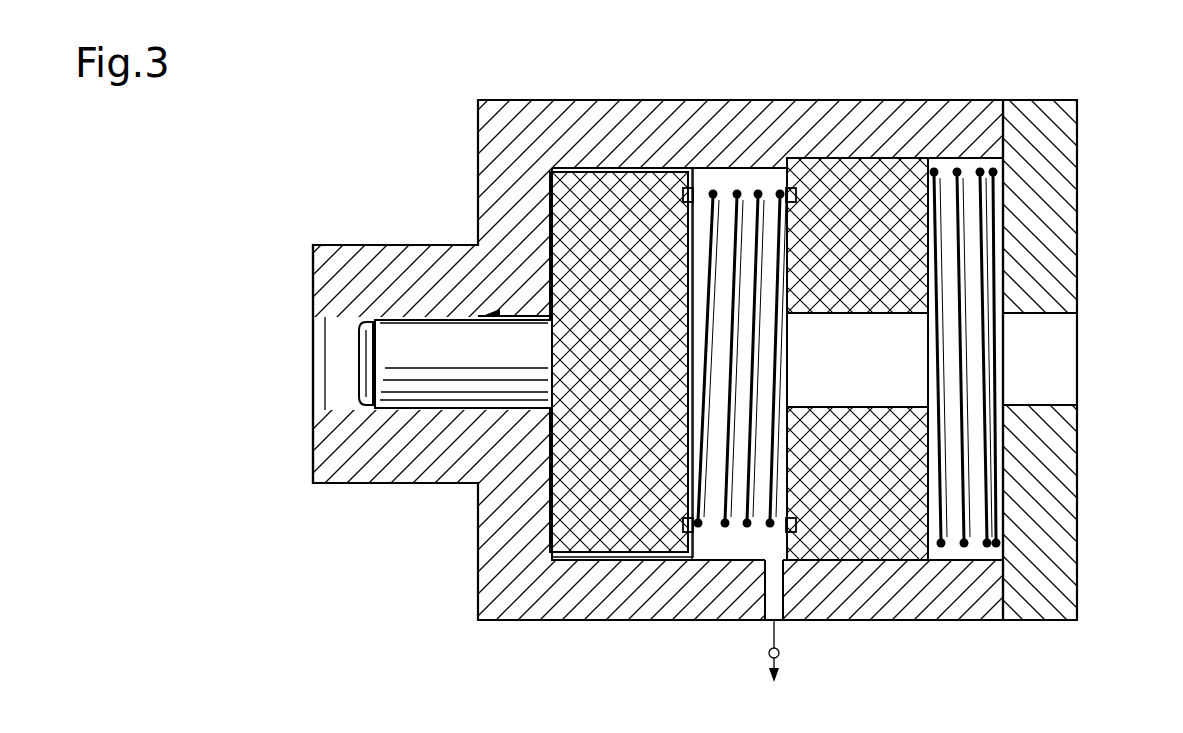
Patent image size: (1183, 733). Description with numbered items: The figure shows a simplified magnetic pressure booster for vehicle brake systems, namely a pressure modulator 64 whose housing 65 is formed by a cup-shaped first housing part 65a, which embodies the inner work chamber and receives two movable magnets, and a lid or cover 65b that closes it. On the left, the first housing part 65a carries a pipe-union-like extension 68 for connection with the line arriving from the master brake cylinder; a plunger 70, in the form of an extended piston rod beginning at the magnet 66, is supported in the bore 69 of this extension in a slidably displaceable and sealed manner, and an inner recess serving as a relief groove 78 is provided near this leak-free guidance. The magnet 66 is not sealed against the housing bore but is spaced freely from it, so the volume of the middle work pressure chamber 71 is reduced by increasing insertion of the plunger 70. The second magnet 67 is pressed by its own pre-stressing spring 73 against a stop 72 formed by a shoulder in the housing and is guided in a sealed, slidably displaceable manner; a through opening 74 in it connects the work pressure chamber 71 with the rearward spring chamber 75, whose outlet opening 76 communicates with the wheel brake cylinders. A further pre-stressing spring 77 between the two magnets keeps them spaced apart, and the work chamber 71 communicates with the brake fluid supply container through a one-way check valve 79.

The pressure modulator 64 is at (676, 628).
The housing 65 is at (896, 92).
The first housing part 65a is at (531, 120).
The cover 65b is at (1065, 225).
The magnet 66 is at (588, 552).
The magnet 67 is at (852, 548).
The extension 68 is at (350, 472).
The bore 69 is at (408, 405).
The plunger 70 is at (465, 388).
The work pressure chamber 71 is at (713, 497).
The stop 72 is at (797, 167).
The pre-stressing spring 73 is at (981, 546).
The through opening 74 is at (914, 313).
The spring chamber 75 is at (960, 538).
The outlet opening 76 is at (1050, 405).
The pre-stressing spring 77 is at (720, 192).
The relief groove 78 is at (492, 306).
The one-way check valve 79 is at (780, 656).